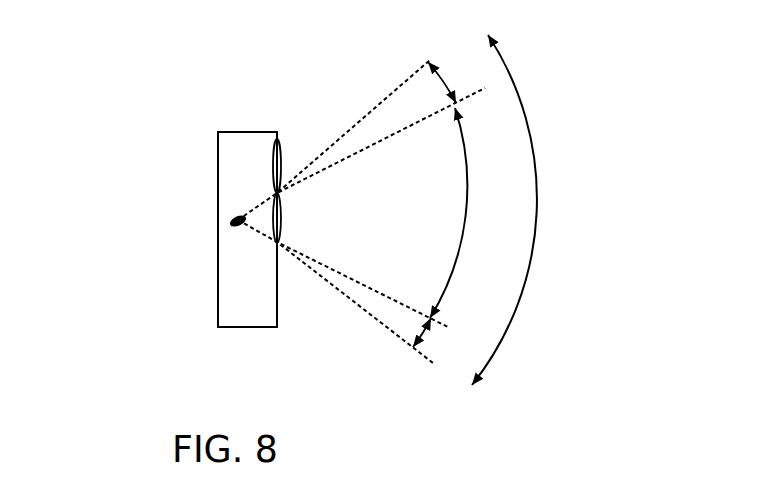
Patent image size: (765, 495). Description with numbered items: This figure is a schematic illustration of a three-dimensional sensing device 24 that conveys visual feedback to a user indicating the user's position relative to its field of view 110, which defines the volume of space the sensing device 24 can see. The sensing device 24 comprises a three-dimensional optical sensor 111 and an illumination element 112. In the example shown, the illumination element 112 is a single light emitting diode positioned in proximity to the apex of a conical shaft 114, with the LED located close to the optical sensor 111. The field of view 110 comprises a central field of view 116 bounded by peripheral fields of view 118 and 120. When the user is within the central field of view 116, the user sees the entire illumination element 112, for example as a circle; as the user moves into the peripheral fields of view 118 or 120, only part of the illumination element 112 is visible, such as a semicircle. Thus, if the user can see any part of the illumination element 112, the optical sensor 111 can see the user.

The 3D sensing device 24 is at (218, 145).
The 3D optical sensor 111 is at (280, 150).
The conical shaft 114 is at (268, 223).
The illumination element 112 is at (236, 222).
The field of view 110 is at (517, 83).
The central field of view 116 is at (465, 218).
The peripheral field of view 118 is at (447, 82).
The peripheral field of view 120 is at (425, 337).